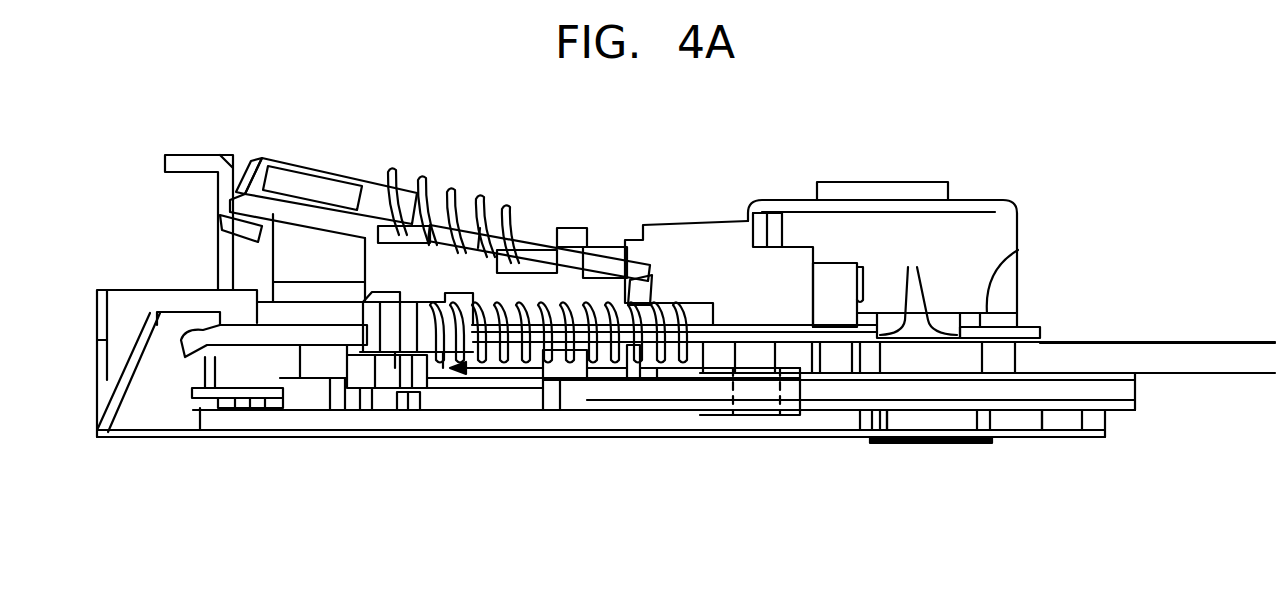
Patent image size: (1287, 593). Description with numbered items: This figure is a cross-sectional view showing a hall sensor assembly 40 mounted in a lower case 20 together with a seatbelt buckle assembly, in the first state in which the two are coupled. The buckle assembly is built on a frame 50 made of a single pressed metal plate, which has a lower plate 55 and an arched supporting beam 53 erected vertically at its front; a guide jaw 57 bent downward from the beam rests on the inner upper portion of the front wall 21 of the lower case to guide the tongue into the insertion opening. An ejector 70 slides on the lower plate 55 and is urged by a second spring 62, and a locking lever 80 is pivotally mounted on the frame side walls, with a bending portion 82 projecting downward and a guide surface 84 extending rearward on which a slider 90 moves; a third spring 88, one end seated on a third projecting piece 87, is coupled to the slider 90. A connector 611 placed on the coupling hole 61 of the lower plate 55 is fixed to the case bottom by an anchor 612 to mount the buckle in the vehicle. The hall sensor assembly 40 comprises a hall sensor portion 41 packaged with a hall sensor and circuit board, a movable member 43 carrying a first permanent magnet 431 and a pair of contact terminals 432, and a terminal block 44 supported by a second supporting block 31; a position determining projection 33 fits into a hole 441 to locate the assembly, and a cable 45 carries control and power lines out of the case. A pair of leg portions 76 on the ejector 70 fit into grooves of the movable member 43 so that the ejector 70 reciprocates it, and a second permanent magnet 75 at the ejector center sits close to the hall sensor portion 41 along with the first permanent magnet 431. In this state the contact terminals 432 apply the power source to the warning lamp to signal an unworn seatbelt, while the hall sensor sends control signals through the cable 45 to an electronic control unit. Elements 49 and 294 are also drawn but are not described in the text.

The lower case 20 is at (906, 448).
The front wall 21 is at (128, 366).
The second supporting block 31 is at (760, 424).
The position determining projection 33 is at (648, 413).
The hall sensor assembly 40 is at (395, 432).
The hall sensor portion 41 is at (234, 382).
The movable member 43 is at (365, 372).
The terminal block 44 is at (689, 405).
The cable 45 is at (1120, 393).
The toothed bar 49 is at (257, 350).
The frame 50 is at (585, 216).
The arched supporting beam 53 is at (222, 152).
The lower plate 55 is at (707, 336).
The guide jaw 57 is at (181, 332).
The coupling hole 61 is at (910, 268).
The second spring 62 is at (855, 220).
The ejector 70 is at (389, 286).
The second permanent magnet 75 is at (392, 360).
The leg portions 76 is at (390, 360).
The locking lever 80 is at (537, 226).
The bending portion 82 is at (220, 221).
The guide surface 84 is at (250, 175).
The third projecting piece 87 is at (273, 250).
The third spring 88 is at (452, 188).
The slider 90 is at (321, 160).
The plate section 294 is at (620, 413).
The first permanent magnet 431 is at (412, 366).
The contact terminals 432 is at (443, 372).
The hole 441 is at (622, 366).
The connector 611 is at (1195, 355).
The anchor 612 is at (1018, 252).